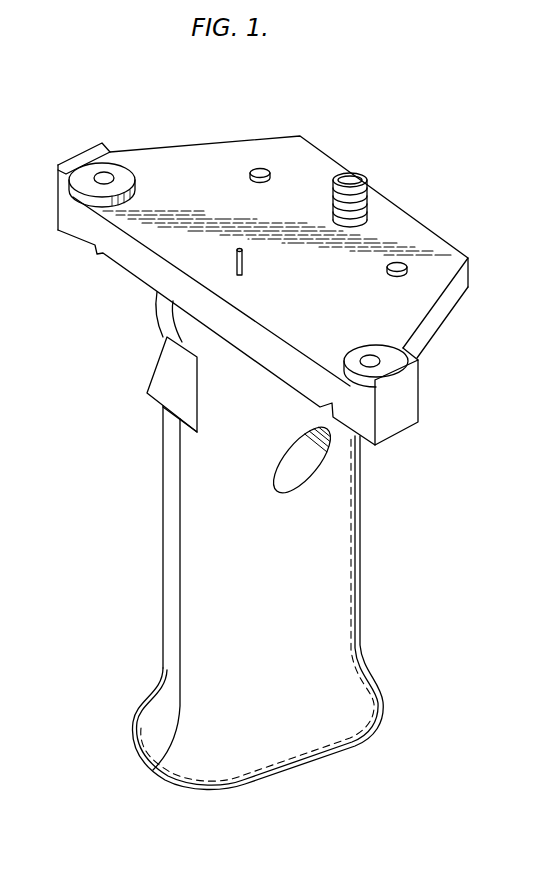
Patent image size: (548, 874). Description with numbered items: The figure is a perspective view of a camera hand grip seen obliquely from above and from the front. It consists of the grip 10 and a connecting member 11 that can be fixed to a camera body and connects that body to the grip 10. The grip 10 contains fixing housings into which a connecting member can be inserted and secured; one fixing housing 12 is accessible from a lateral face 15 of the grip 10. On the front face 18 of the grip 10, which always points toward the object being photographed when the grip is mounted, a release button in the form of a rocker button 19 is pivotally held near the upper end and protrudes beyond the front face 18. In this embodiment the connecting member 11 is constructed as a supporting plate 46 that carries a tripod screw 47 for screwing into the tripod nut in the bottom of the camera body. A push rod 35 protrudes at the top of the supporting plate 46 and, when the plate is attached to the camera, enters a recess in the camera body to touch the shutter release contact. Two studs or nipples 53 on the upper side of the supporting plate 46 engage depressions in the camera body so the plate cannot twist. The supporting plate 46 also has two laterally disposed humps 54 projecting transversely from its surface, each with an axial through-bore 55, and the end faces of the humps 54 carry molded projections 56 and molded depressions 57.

The grip 10 is at (235, 541).
The connecting member 11 is at (207, 138).
The fixing housing 12 is at (317, 470).
The lateral face 15 is at (327, 612).
The front face 18 is at (167, 513).
The rocker button 19 is at (157, 380).
The push rod 35 is at (235, 253).
The supporting plate 46 is at (383, 218).
The tripod screw 47 is at (334, 197).
The studs or nipples 53 is at (258, 166).
The humps 54 is at (63, 207).
The axial through-bore 55 is at (113, 177).
The molded projections 56 is at (73, 155).
The molded depressions 57 is at (88, 175).